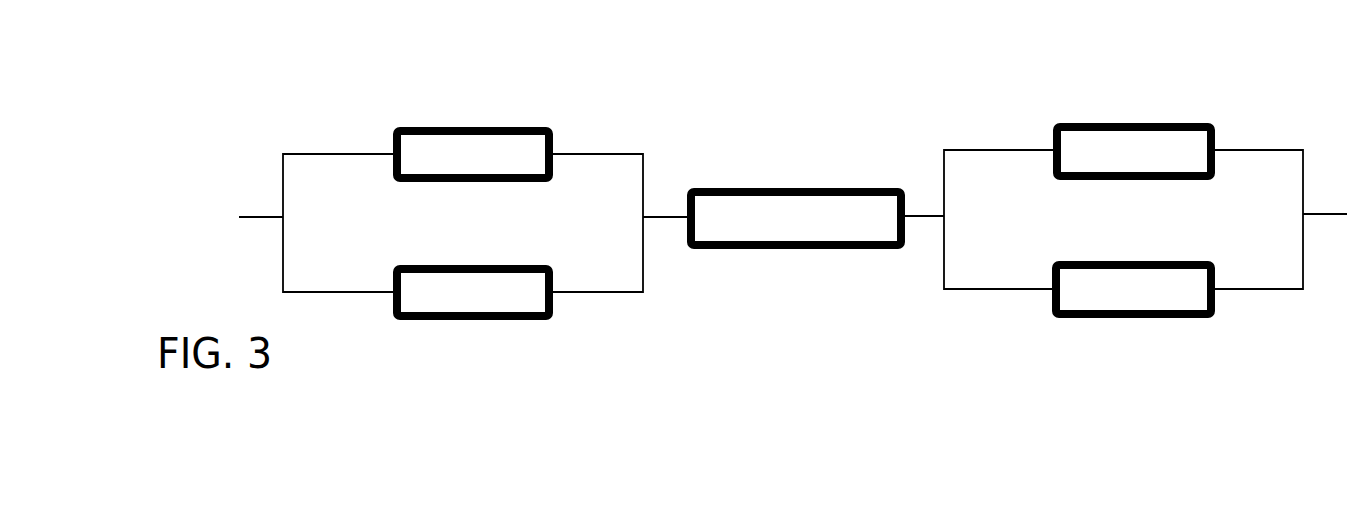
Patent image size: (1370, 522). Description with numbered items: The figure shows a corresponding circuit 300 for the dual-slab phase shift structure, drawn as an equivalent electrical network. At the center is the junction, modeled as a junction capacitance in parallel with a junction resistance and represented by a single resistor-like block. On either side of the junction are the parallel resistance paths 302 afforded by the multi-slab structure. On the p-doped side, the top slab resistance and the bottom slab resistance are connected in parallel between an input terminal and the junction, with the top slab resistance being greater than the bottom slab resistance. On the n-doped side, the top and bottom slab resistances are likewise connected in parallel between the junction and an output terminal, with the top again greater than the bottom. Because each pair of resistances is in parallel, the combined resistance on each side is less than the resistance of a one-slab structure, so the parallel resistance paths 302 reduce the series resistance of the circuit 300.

The corresponding circuit 300 is at (823, 104).
The parallel resistance paths 302 is at (777, 220).